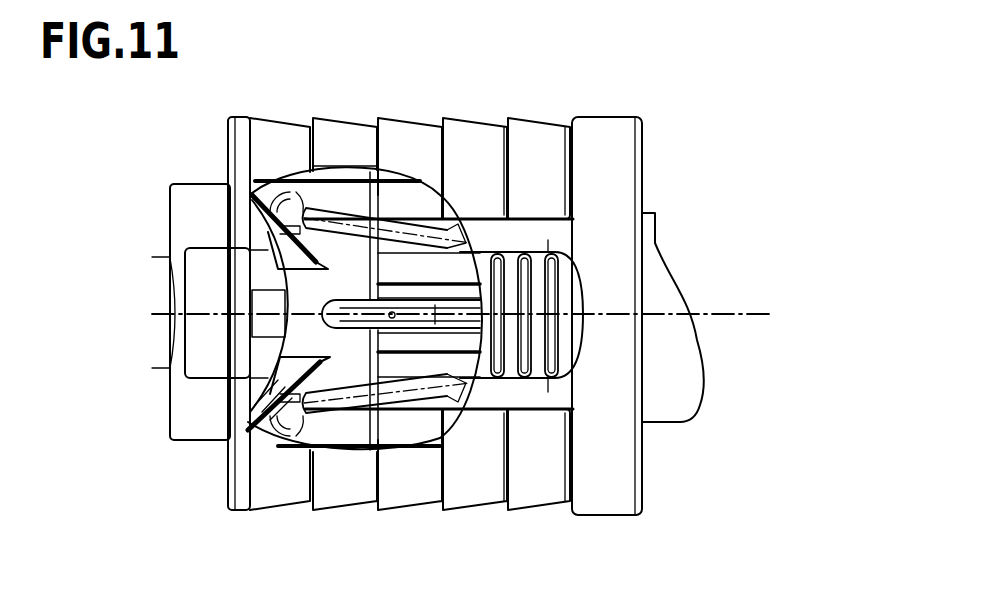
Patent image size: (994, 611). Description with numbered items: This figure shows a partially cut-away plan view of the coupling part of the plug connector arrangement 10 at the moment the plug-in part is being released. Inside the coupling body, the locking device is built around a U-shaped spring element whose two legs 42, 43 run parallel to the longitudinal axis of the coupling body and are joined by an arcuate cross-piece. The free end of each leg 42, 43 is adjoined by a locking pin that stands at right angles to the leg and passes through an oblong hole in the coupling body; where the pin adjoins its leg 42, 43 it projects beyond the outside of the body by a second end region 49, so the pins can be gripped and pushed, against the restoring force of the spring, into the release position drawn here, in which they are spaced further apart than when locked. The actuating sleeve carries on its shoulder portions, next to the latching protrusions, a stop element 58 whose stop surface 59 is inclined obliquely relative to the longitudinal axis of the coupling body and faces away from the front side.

The plug connector arrangement 10 is at (568, 76).
The leg 42 is at (414, 181).
The leg 43 is at (414, 447).
The second end region 49 is at (289, 212).
The stop element 58 is at (256, 236).
The stop surface 59 is at (344, 180).